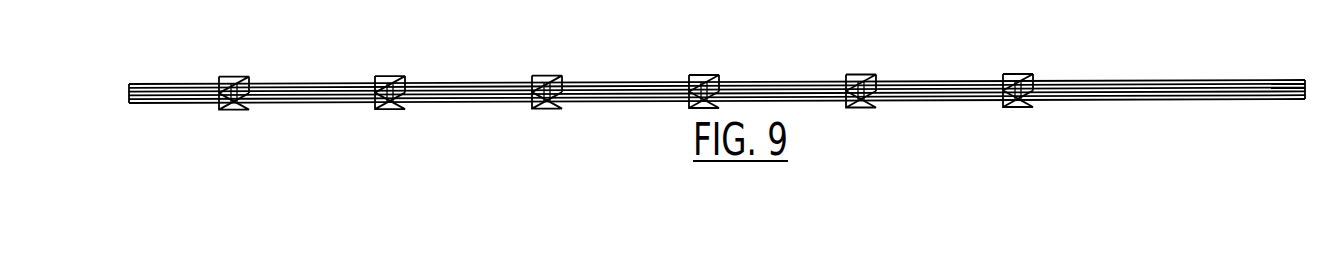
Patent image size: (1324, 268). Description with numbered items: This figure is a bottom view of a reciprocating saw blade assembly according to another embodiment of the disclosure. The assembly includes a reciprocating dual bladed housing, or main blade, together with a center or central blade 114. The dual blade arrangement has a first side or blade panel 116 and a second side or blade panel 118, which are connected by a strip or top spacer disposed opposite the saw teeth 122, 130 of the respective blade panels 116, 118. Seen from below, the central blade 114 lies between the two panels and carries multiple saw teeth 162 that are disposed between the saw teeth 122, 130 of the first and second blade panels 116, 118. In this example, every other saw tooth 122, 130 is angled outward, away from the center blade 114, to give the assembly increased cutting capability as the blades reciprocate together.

The central blade 114 is at (130, 99).
The first blade panel 116 is at (200, 104).
The second blade panel 118 is at (160, 85).
The saw teeth 122 is at (238, 107).
The saw teeth 130 is at (237, 78).
The saw teeth 162 is at (374, 91).